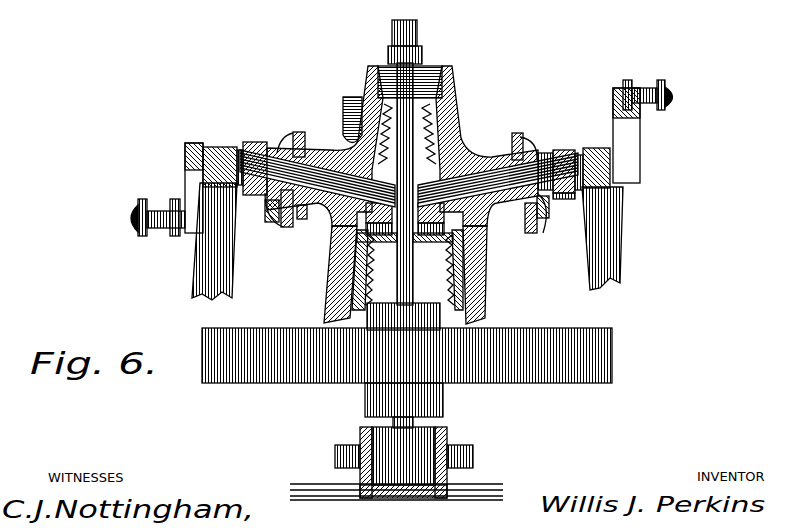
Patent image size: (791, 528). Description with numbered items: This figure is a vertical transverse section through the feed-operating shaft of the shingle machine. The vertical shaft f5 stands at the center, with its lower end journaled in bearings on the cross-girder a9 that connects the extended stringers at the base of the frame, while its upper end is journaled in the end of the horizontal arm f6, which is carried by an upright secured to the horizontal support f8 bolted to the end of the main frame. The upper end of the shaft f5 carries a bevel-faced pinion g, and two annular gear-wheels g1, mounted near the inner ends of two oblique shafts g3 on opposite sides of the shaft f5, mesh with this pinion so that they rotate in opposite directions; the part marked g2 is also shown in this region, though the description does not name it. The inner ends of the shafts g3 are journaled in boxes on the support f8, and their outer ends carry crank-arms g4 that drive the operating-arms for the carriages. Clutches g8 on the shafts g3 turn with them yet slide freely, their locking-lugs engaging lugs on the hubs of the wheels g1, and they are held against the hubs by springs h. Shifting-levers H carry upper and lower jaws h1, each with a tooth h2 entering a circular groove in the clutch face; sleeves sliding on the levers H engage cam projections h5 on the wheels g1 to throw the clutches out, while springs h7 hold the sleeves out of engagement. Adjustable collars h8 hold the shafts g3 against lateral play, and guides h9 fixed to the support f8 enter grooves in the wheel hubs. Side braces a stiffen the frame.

The horizontal arm f6 is at (421, 40).
The bevel-faced pinion g is at (368, 76).
The annular gear-wheels g1 is at (330, 280).
The inner cups g2 is at (460, 118).
The oblique shafts g3 is at (465, 185).
The crank-arms g4 is at (185, 170).
The clutches g8 is at (270, 223).
The springs h is at (258, 148).
The upper and lower jaw h1 is at (300, 148).
The tooth h2 is at (300, 158).
The cam projections h5 is at (348, 118).
The springs h7 is at (305, 219).
The adjustable collars h8 is at (236, 140).
The guides h9 is at (450, 245).
The shifting-levers H is at (400, 141).
The vertical shaft f5 is at (397, 290).
The horizontal support f8 is at (388, 245).
The side braces a is at (505, 384).
The cross-girder a9 is at (396, 501).